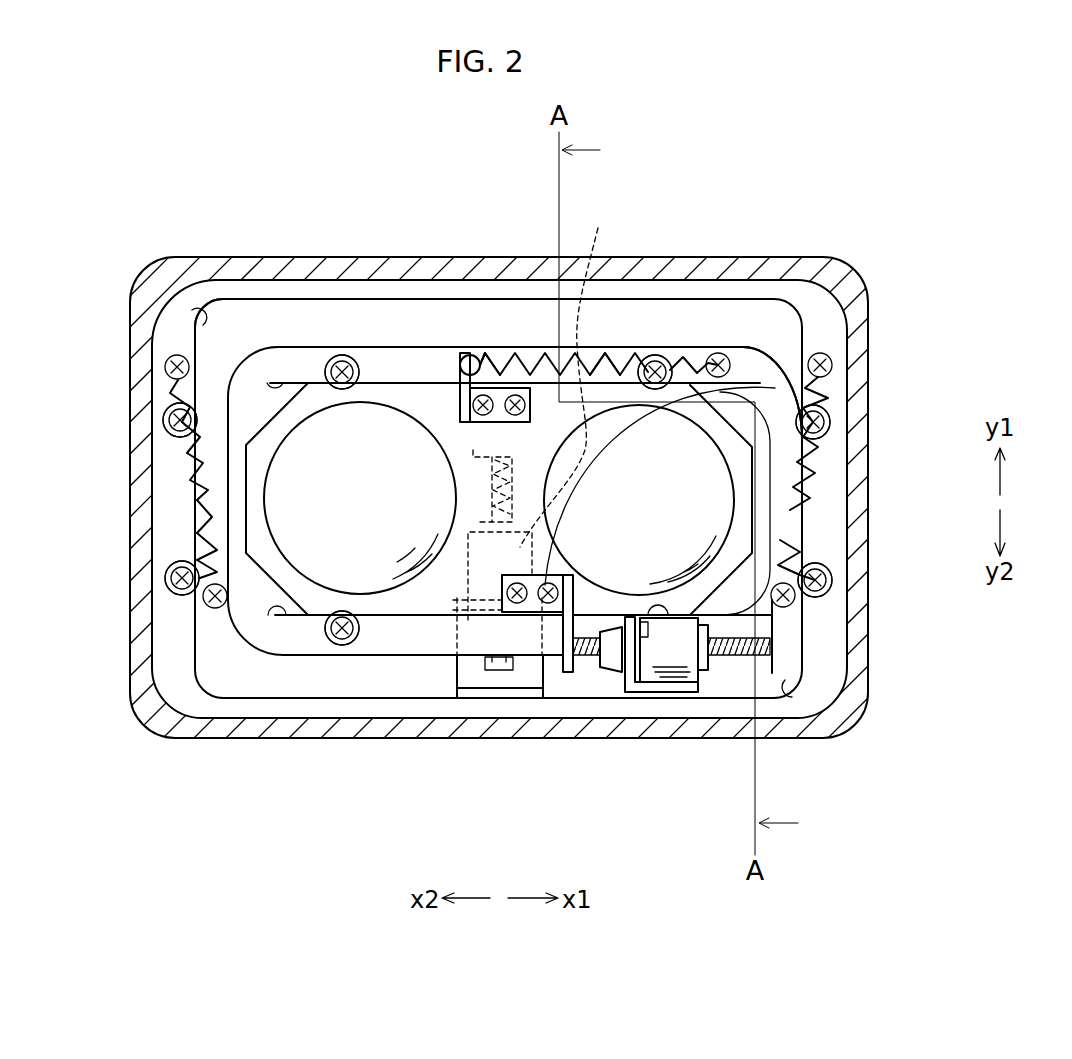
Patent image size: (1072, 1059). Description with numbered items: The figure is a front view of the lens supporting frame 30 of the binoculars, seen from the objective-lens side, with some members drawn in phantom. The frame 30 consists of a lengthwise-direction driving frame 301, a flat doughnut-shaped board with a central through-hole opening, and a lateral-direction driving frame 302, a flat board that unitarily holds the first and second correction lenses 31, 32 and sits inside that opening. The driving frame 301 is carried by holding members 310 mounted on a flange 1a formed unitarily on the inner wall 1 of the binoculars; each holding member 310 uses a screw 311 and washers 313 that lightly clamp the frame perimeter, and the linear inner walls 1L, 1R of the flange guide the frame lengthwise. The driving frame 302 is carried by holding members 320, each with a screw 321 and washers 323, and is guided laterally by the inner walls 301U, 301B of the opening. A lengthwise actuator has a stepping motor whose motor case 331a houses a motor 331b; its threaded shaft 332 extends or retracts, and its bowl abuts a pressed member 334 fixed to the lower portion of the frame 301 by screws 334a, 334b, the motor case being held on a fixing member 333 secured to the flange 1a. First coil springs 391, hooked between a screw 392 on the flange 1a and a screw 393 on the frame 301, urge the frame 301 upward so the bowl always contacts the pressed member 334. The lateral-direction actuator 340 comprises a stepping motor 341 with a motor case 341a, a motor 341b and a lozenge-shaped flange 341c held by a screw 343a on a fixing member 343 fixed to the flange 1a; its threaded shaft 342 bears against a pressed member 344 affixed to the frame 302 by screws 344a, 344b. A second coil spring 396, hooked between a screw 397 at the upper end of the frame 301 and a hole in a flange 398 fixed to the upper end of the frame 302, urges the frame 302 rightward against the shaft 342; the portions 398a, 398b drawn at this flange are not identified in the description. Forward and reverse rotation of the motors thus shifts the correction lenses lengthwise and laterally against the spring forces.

The inner wall 1 is at (872, 274).
The flange 1a is at (808, 268).
The inner wall 1L is at (148, 312).
The inner wall 1R is at (843, 705).
The lengthwise-direction driving frame 301 is at (808, 322).
The inner wall 301U is at (268, 300).
The inner wall 301B is at (266, 692).
The lateral-direction driving frame 302 is at (237, 300).
The lens supporting frame 30 is at (405, 324).
The first correction lens 31 is at (678, 490).
The second correction lens 32 is at (300, 555).
The holding member 310 is at (168, 460).
The screw 311 is at (166, 414).
The washer 313 is at (168, 426).
The holding member 320 is at (313, 350).
The screw 321 is at (338, 354).
The washer 323 is at (648, 354).
The motor case 331a is at (578, 374).
The motor 331b is at (517, 420).
The shaft 332 is at (470, 403).
The fixing member 333 is at (460, 697).
The pressed member 334 is at (470, 690).
The screw 334a is at (500, 700).
The screw 334b is at (382, 638).
The lateral-direction actuator 340 is at (783, 608).
The stepping motor 341 is at (675, 682).
The motor case 341a is at (700, 692).
The motor 341b is at (708, 662).
The flange 341c is at (671, 695).
The shaft 342 is at (592, 658).
The fixing member 343 is at (612, 672).
The screw 343a is at (766, 658).
The pressed member 344 is at (566, 674).
The screw 344a is at (760, 340).
The screw 344b is at (503, 585).
The first coil spring 391 is at (194, 468).
The screw 392 is at (165, 364).
The screw 393 is at (205, 605).
The second coil spring 396 is at (613, 348).
The screw 397 is at (704, 360).
The flange 398 is at (468, 352).
The spring hook 398a is at (486, 356).
The spring pin 398b is at (470, 354).